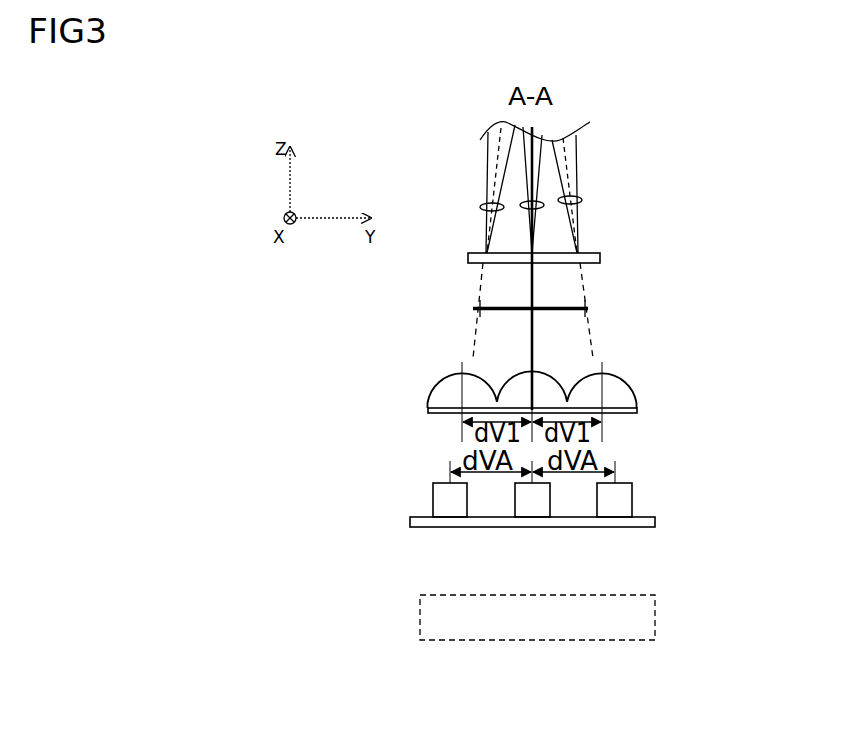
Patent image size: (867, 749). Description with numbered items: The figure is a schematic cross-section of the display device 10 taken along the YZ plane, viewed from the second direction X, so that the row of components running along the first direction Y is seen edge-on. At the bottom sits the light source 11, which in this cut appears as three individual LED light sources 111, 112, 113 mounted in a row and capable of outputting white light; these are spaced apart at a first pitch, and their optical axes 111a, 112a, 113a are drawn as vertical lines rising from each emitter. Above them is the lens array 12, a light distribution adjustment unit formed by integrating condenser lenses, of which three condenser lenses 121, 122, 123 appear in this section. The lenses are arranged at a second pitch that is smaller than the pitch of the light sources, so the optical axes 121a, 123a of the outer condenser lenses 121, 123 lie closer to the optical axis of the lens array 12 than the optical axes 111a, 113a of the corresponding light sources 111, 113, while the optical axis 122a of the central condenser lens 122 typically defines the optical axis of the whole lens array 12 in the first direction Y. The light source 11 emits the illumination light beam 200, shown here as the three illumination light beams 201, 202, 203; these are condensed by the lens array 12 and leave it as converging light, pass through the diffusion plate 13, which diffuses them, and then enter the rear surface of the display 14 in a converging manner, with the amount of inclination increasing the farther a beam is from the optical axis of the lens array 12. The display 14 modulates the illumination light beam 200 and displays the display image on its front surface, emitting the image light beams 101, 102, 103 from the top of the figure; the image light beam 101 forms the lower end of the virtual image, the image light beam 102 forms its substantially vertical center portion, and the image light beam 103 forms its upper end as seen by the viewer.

The display device 10 is at (646, 144).
The light source 11 is at (649, 509).
The light source 111 is at (615, 502).
The light source 112 is at (535, 502).
The light source 113 is at (447, 502).
The optical axis of light source 111 111a is at (615, 462).
The optical axis of light source 112 112a is at (532, 473).
The optical axis of light source 113 113a is at (450, 462).
The lens array 12 is at (452, 362).
The condenser lens 121 is at (620, 392).
The condenser lens 122 is at (543, 376).
The condenser lens 123 is at (446, 383).
The optical axis of condenser lens 121 121a is at (602, 403).
The optical axis of condenser lens 122 122a is at (533, 402).
The optical axis of condenser lens 123 123a is at (457, 400).
The diffusion plate 13 is at (597, 309).
The display 14 is at (600, 254).
The image light beam 101 is at (581, 199).
The image light beam 102 is at (526, 198).
The image light beam 103 is at (482, 208).
The illumination light beam 200 is at (537, 617).
The illumination light beam 201 is at (584, 284).
The illumination light beam 202 is at (531, 287).
The illumination light beam 203 is at (480, 298).